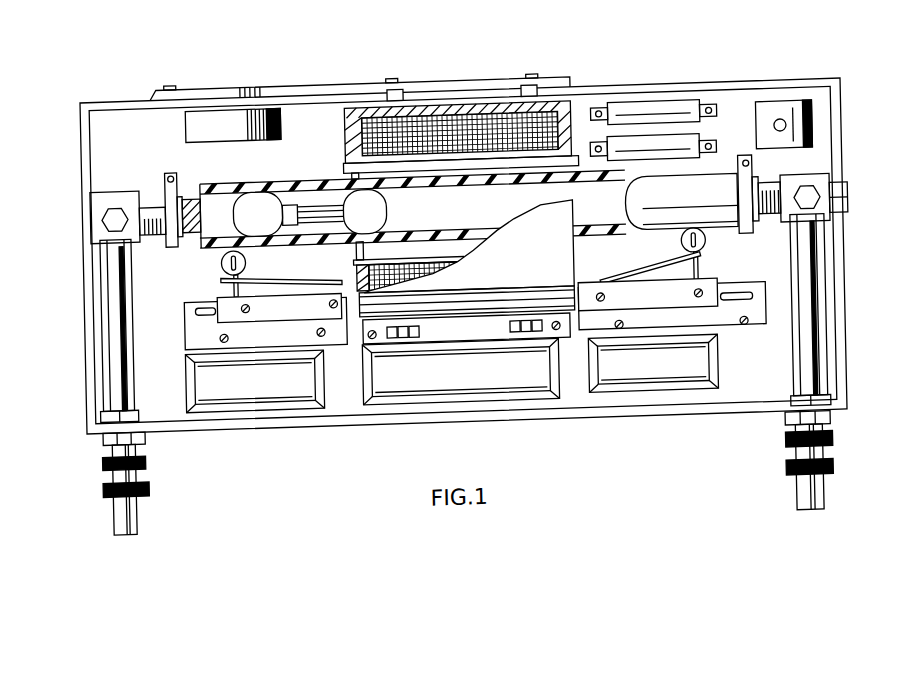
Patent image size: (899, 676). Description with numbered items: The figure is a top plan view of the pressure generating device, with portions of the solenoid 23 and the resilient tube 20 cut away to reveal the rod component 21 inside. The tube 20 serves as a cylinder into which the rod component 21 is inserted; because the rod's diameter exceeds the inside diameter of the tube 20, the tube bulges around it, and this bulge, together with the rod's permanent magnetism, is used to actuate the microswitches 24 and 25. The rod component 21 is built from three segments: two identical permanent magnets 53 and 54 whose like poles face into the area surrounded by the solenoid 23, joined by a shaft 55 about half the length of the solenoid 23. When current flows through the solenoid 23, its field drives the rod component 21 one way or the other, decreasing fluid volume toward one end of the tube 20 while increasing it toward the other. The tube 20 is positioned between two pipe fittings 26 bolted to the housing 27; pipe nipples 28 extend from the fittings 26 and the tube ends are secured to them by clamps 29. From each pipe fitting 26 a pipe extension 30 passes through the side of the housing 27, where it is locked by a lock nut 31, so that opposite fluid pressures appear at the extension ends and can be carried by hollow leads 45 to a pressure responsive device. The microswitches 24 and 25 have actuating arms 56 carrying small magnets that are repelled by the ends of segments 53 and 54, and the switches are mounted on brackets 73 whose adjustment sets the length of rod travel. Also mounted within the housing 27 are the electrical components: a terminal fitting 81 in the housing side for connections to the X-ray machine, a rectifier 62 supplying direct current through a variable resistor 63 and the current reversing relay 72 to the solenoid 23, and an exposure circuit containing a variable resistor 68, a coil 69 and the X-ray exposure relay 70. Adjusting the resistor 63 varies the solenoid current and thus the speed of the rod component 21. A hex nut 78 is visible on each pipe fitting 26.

The resilient tube 20 is at (681, 193).
The rod component 21 is at (328, 193).
The solenoid 23 is at (459, 118).
The microswitch 24 is at (448, 289).
The microswitch 25 is at (487, 328).
The pipe fitting 26 is at (468, 195).
The housing 27 is at (463, 240).
The pipe nipple 28 is at (472, 183).
The clamp 29 is at (461, 186).
The pipe extension 30 is at (27, 235).
The lock nut 31 is at (465, 435).
The hollow lead 45 is at (469, 478).
The permanent magnet segment 53 is at (286, 189).
The permanent magnet segment 54 is at (404, 205).
The shaft 55 is at (319, 187).
The actuating arm 56 is at (463, 264).
The rectifier 62 is at (817, 123).
The variable resistor 63 is at (652, 88).
The variable resistor 68 is at (587, 63).
The coil 69 is at (653, 389).
The X-ray exposure relay 70 is at (255, 405).
The current reversing relay 72 is at (461, 396).
The bracket 73 is at (456, 327).
The hex nut 78 is at (494, 183).
The terminal fitting 81 is at (233, 129).